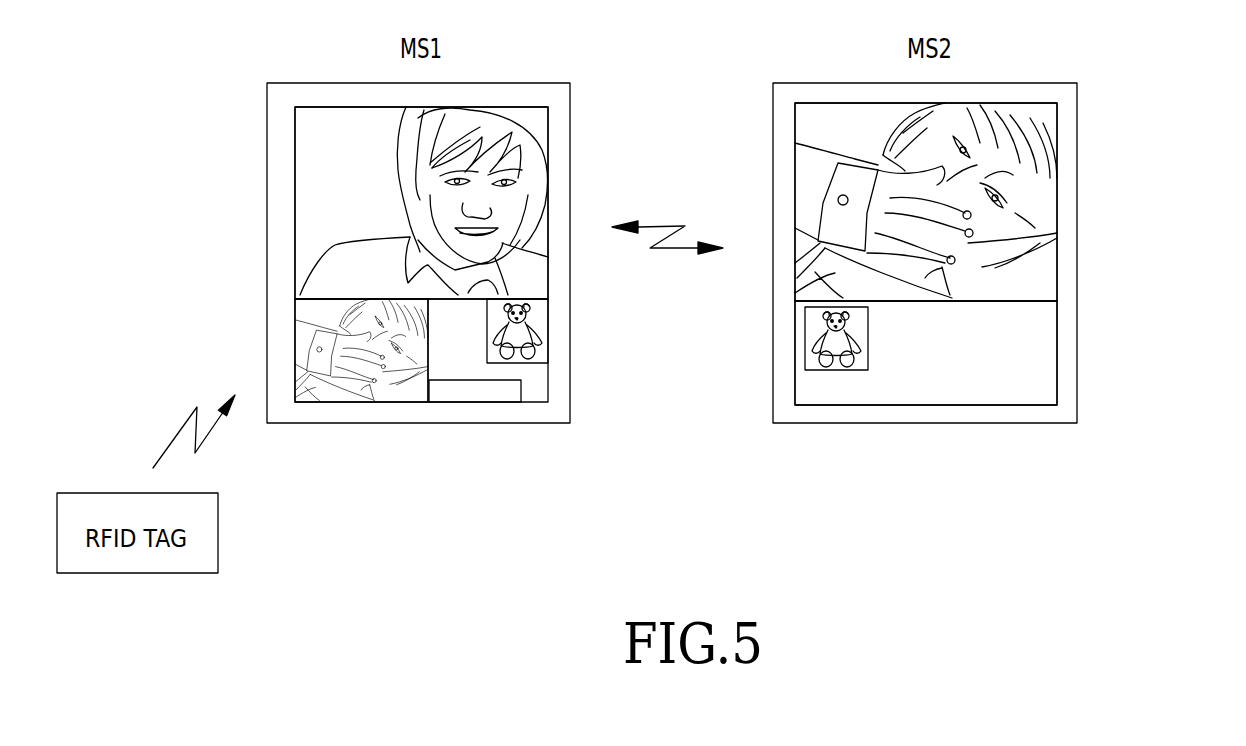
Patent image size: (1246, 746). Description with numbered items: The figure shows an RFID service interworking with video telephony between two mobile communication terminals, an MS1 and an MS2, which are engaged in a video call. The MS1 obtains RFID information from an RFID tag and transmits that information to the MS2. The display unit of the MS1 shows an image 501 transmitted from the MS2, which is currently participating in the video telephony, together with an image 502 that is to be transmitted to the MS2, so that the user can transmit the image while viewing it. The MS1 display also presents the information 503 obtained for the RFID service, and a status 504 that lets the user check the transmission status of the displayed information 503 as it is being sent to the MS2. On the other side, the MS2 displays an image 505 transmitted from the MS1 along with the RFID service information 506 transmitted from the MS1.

The image transmitted from the MS2 501 is at (550, 117).
The image to be transmitted to the MS2 502 is at (360, 403).
The information obtained for the RFID service 503 is at (550, 320).
The status 504 is at (530, 383).
The image transmitted from the MS1 505 is at (1053, 125).
The RFID service information 506 is at (1050, 327).